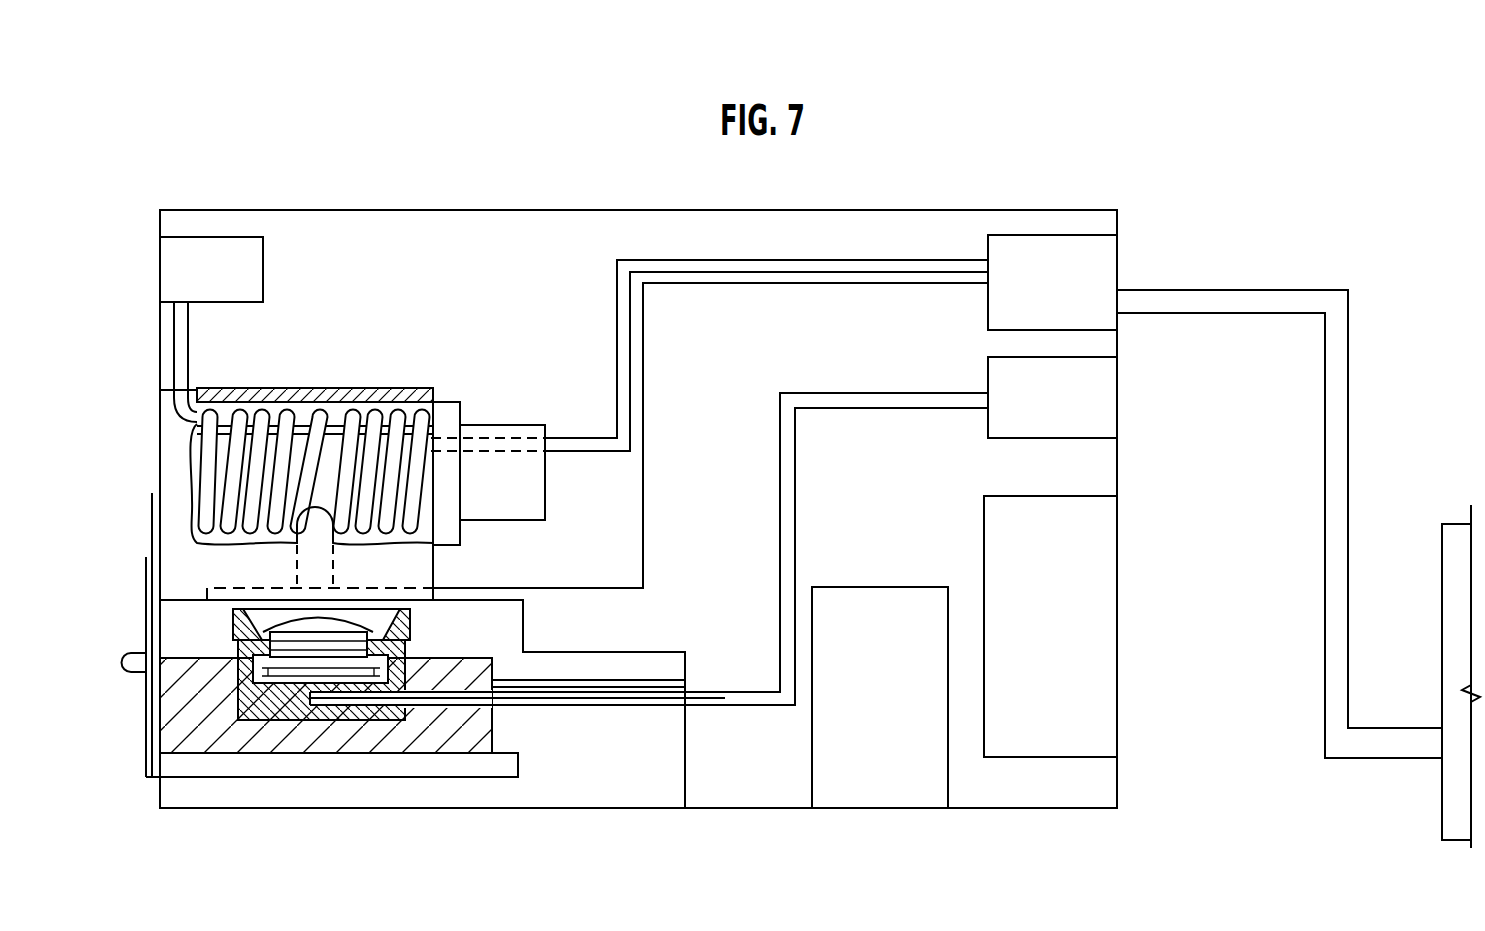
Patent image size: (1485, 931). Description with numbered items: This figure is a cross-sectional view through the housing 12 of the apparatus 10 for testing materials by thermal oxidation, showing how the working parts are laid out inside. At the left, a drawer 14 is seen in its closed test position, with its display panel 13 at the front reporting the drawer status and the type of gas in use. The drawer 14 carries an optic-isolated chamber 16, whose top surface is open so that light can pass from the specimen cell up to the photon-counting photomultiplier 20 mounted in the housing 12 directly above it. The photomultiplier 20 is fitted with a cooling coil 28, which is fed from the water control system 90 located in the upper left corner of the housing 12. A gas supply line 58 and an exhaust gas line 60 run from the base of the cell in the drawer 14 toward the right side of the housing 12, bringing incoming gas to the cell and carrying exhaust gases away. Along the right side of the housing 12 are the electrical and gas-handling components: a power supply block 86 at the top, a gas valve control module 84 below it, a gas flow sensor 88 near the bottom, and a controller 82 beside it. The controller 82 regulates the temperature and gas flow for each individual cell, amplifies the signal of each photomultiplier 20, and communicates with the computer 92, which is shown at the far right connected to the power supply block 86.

The apparatus 10 is at (599, 205).
The housing 12 is at (448, 208).
The display panel 13 is at (150, 502).
The drawer 14 is at (142, 745).
The optic-isolated chamber 16 is at (180, 610).
The photon-counting photomultiplier 20 is at (200, 438).
The cooling coil 28 is at (292, 415).
The gas supply line 58 is at (724, 680).
The exhaust gas line 60 is at (750, 708).
The controller 82 is at (1100, 578).
The gas valve control module 84 is at (1105, 405).
The power supply block 86 is at (1100, 262).
The gas flow sensor 88 is at (913, 795).
The water control system 90 is at (232, 248).
The computer 92 is at (1446, 540).